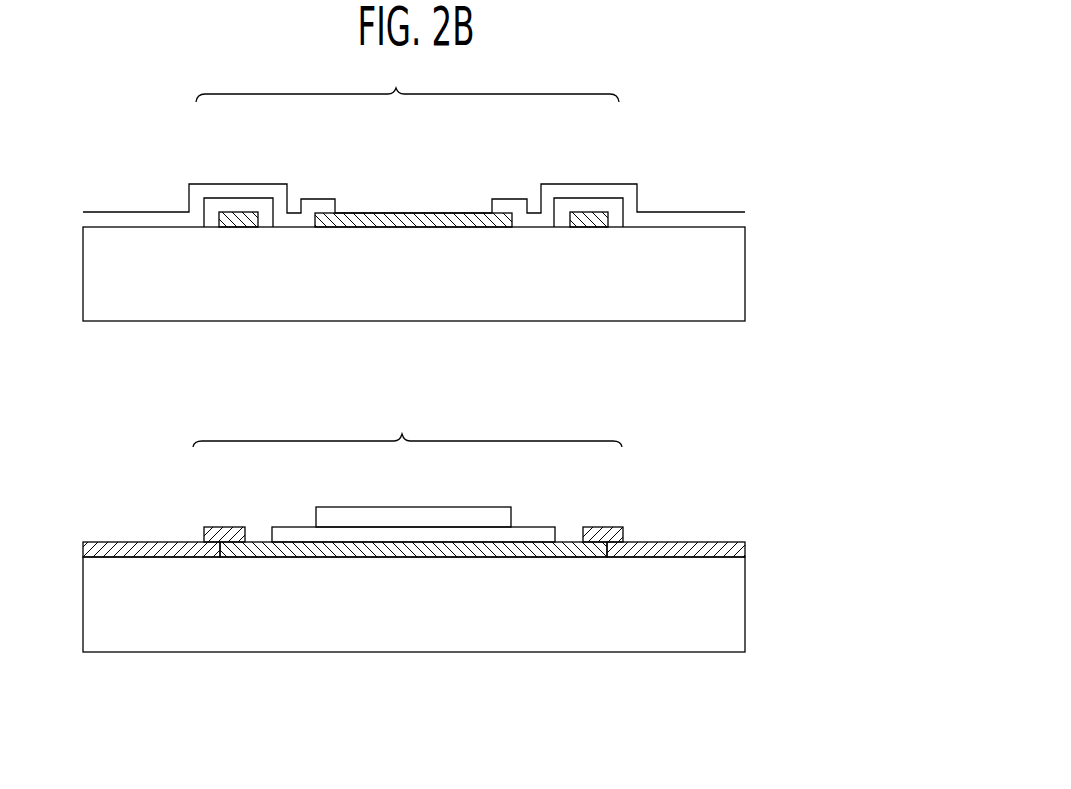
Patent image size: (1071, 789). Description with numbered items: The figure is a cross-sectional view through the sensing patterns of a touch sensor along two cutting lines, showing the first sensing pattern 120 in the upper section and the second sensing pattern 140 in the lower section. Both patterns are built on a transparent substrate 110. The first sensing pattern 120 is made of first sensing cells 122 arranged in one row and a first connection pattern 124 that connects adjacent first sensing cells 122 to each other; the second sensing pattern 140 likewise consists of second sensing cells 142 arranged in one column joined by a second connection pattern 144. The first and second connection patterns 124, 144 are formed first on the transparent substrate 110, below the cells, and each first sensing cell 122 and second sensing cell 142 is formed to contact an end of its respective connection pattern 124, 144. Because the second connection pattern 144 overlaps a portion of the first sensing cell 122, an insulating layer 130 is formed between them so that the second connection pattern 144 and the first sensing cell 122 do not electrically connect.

The transparent substrate 110 is at (738, 267).
The first sensing pattern 120 is at (407, 81).
The first sensing cell 122 is at (230, 187).
The first connection pattern 124 is at (416, 216).
The insulating layer 130 is at (213, 220).
The second sensing pattern 140 is at (407, 425).
The second sensing cell 142 is at (213, 527).
The second connection pattern 144 is at (242, 220).